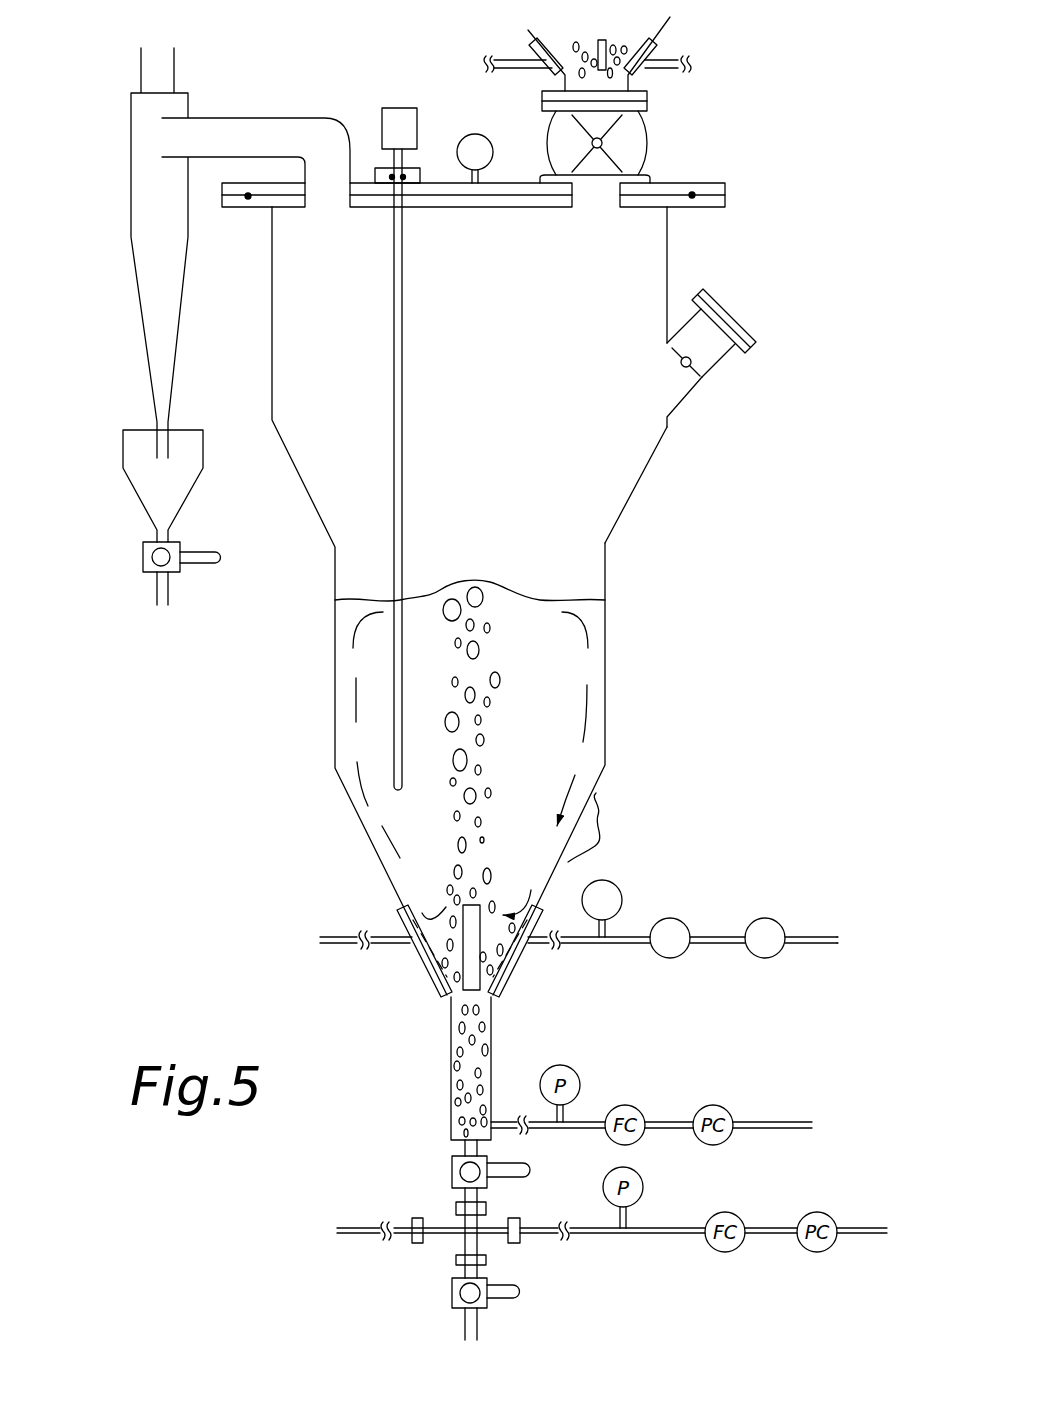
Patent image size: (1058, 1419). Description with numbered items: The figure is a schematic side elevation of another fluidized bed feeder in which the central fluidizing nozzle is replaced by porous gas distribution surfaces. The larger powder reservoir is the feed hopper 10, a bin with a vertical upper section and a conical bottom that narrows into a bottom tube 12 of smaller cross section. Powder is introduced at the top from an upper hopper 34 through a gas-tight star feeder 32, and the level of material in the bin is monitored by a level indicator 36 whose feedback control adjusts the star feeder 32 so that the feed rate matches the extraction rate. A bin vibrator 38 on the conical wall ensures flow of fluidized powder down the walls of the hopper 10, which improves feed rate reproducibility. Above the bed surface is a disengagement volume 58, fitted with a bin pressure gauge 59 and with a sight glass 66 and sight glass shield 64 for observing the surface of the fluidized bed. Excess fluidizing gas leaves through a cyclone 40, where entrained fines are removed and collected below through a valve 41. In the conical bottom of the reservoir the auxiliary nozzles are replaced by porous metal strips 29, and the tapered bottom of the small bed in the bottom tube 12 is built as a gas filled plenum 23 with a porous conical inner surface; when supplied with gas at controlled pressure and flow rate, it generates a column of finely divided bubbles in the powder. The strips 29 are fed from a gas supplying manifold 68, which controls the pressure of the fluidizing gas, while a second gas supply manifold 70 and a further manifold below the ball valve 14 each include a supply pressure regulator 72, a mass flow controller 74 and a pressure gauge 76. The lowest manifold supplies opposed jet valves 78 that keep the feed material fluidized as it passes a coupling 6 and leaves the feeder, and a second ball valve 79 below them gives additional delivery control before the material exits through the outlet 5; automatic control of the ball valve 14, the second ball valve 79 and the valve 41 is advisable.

The outlet pipe 5 is at (492, 1308).
The coupling 6 is at (455, 1209).
The feed hopper 10 is at (607, 670).
The bottom tube 12 is at (495, 1043).
The ball valve 14 is at (452, 1169).
The gas filled plenum 23 is at (456, 1129).
The porous metal strips 29 is at (481, 906).
The star feeder 32 is at (652, 143).
The upper hopper 34 is at (668, 30).
The level indicator 36 is at (418, 120).
The bin vibrator 38 is at (604, 813).
The cyclone 40 is at (138, 308).
The valve 41 is at (190, 545).
The disengagement volume 58 is at (636, 489).
The bin pressure gauge 59 is at (490, 139).
The sight glass shield 64 is at (706, 388).
The sight glass 66 is at (737, 310).
The gas supplying manifold 68 is at (789, 930).
The second gas supply manifold 70 is at (721, 930).
The supply pressure regulator 72 is at (774, 913).
The mass flow controller 74 is at (673, 916).
The pressure gauge 76 is at (609, 879).
The opposed jet valves 78 is at (462, 1239).
The second ball valve 79 is at (452, 1294).